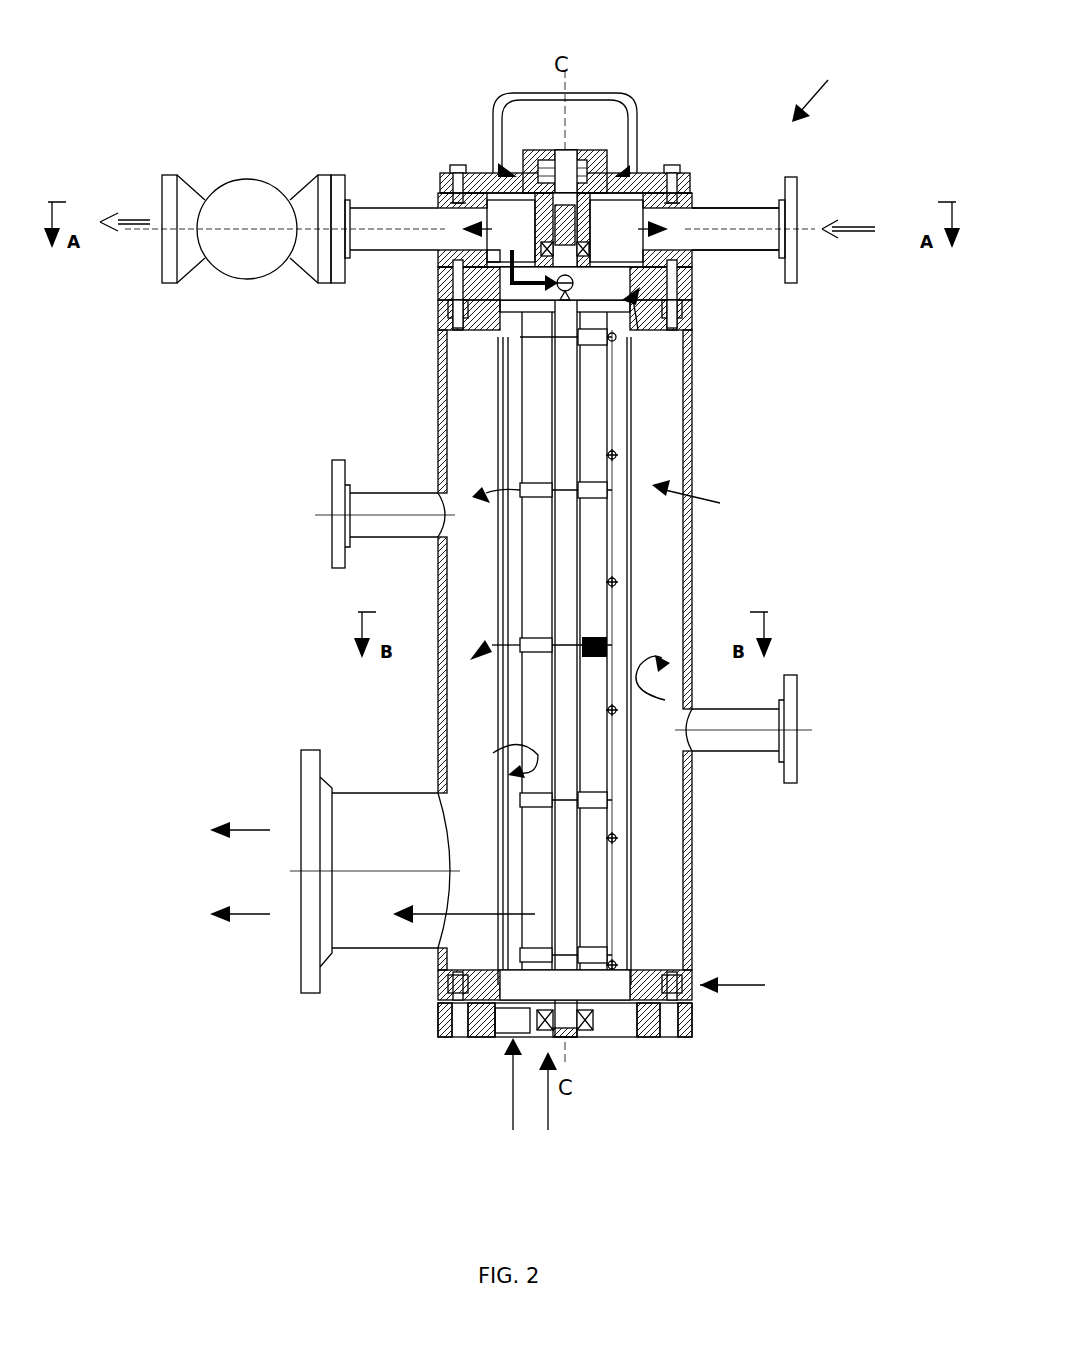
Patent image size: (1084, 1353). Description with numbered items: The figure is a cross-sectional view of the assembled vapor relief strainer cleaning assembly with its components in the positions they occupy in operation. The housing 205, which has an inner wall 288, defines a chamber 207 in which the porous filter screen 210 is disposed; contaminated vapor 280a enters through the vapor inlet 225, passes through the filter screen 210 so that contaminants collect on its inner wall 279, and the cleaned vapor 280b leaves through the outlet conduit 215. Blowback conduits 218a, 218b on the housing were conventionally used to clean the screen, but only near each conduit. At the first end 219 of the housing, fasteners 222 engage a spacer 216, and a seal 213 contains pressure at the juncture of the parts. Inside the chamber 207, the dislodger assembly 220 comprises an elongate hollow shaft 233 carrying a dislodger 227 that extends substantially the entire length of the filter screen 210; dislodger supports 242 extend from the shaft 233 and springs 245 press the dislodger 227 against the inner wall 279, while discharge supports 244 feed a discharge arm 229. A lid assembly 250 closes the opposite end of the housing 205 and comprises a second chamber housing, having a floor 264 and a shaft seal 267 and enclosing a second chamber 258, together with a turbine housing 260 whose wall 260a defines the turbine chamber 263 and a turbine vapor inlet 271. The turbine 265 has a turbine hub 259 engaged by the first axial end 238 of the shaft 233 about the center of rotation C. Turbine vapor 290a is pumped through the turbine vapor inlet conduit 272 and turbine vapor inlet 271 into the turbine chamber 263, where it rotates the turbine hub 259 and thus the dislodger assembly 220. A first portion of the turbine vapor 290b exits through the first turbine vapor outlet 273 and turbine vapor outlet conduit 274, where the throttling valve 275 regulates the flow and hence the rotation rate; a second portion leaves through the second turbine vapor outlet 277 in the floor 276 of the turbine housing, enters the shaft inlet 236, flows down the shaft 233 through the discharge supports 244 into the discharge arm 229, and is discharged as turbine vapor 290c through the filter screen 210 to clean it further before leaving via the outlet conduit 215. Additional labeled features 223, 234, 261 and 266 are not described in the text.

The shell 205 is at (692, 862).
The chamber 207 is at (533, 557).
The filter screen 210 is at (500, 400).
The inlet port 213 is at (500, 1038).
The outlet conduit 215 is at (377, 942).
The bottom plate 216 is at (648, 1040).
The blowback conduit 218a is at (406, 538).
The blowback conduit 218b is at (746, 753).
The first end 219 is at (623, 985).
The dislodger assembly 220 is at (709, 498).
The top flange 222 is at (673, 168).
The bearing 223 is at (575, 1040).
The vapor inlet 225 is at (620, 1040).
The dislodger 227 is at (622, 407).
The discharge arm 229 is at (513, 372).
The shaft 233 is at (558, 690).
The flow path 234 is at (544, 1110).
The shaft inlet 236 is at (540, 318).
The first axial end 238 is at (612, 168).
The fasteners 242 is at (583, 793).
The discharge supports 244 is at (540, 497).
The fastener head 245 is at (597, 637).
The valve head assembly 250 is at (825, 87).
The seal holder 258 is at (640, 332).
The turbine hub 259 is at (498, 172).
The turbine housing 260 is at (440, 268).
The wall 260a is at (703, 180).
The bonnet 261 is at (566, 170).
The turbine chamber 263 is at (475, 168).
The flow path 264 is at (593, 322).
The turbine 265 is at (500, 168).
The handle 266 is at (615, 98).
The port 267 is at (589, 286).
The turbine vapor inlet 271 is at (641, 230).
The turbine vapor inlet conduit 272 is at (757, 250).
The first turbine vapor outlet 273 is at (486, 230).
The turbine vapor outlet conduit 274 is at (380, 207).
The throttling valve 275 is at (247, 179).
The inlet pipe 276 is at (756, 208).
The second turbine vapor outlet 277 is at (480, 290).
The inner wall 279 is at (494, 755).
The contaminated vapor 280a is at (491, 1088).
The cleaned vapor 280b is at (232, 948).
The flow path 288 is at (665, 700).
The turbine vapor 290a is at (866, 233).
The first portion of turbine vapor 290b is at (132, 232).
The second portion of turbine vapor 290c is at (505, 270).